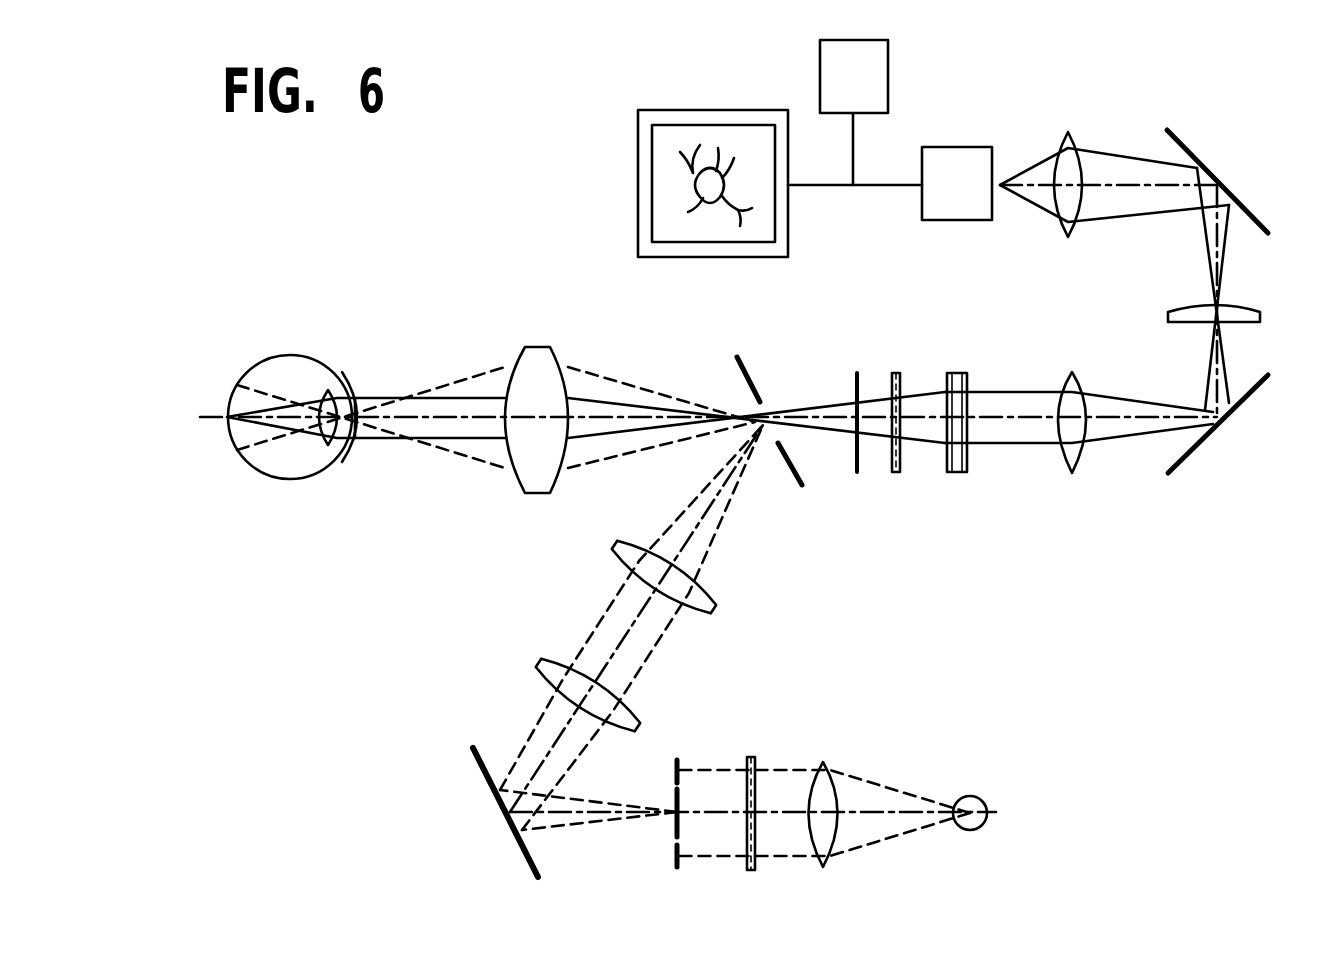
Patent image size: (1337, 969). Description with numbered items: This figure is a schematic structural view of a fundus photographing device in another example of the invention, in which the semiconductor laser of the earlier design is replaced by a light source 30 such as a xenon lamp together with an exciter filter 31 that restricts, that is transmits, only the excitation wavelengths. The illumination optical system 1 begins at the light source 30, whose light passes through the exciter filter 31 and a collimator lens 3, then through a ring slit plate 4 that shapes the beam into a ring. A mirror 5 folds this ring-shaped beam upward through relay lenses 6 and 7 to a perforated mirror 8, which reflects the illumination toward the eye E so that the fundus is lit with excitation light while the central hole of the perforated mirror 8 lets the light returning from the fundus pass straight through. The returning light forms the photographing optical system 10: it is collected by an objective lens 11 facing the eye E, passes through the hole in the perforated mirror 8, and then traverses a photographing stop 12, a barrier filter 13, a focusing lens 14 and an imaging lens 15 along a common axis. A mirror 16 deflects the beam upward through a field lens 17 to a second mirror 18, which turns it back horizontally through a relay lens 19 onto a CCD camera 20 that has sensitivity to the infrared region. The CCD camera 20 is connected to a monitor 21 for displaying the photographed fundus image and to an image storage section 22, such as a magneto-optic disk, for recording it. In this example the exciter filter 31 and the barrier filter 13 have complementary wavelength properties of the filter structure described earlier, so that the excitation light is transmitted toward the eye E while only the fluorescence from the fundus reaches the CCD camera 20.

The eye E is at (287, 357).
The illumination optical system 1 is at (433, 669).
The collimator lens 3 is at (831, 868).
The ring slit plate 4 is at (681, 870).
The mirror 5 is at (474, 760).
The relay lens 6 is at (643, 718).
The relay lens 7 is at (718, 600).
The perforated mirror 8 is at (737, 355).
The photographing optical system 10 is at (1031, 488).
The objective lens 11 is at (522, 362).
The photographing stop 12 is at (855, 373).
The barrier filter 13 is at (896, 372).
The focusing lens 14 is at (957, 372).
The imaging lens 15 is at (1070, 378).
The mirror 16 is at (1183, 478).
The field lens 17 is at (1245, 308).
The mirror 18 is at (1244, 212).
The relay lens 19 is at (1076, 156).
The CCD camera 20 is at (958, 157).
The monitor 21 is at (638, 185).
The image storage section 22 is at (820, 70).
The light source 30 is at (963, 797).
The exciter filter 31 is at (756, 871).